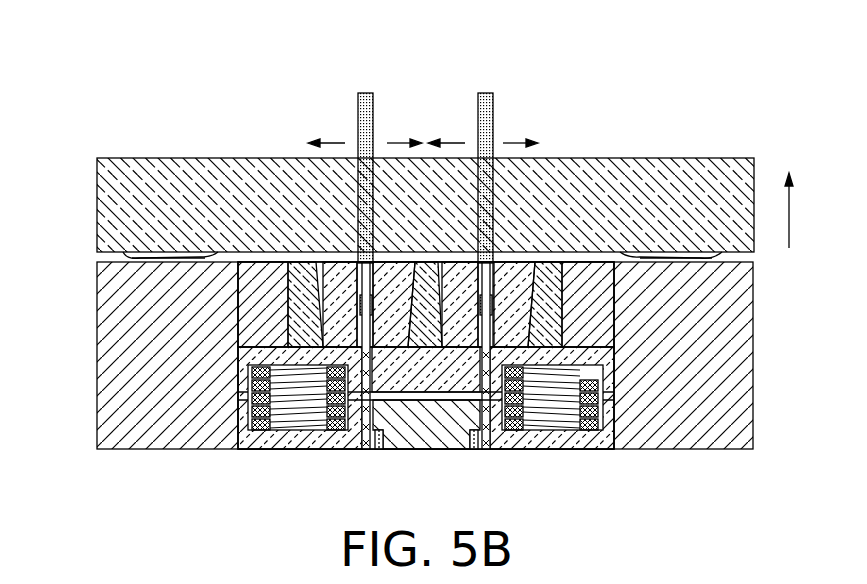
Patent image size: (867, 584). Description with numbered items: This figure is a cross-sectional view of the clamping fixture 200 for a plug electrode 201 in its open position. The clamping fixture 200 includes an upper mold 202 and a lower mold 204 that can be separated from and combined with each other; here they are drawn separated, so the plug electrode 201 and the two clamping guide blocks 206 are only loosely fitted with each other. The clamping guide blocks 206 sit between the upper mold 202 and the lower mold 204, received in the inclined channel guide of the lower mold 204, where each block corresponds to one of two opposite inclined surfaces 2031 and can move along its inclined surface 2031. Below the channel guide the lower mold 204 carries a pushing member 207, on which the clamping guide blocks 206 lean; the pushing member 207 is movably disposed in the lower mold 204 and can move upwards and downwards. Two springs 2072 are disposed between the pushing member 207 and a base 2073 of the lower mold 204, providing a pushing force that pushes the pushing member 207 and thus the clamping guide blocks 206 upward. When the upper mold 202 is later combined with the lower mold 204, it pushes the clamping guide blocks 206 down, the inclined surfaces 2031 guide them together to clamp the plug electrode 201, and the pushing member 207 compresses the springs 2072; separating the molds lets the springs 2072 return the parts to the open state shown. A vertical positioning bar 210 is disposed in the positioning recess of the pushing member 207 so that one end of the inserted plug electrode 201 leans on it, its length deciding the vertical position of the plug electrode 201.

The clamping fixture 200 is at (88, 35).
The plug electrode 201 is at (366, 92).
The upper mold 202 is at (722, 172).
The lower mold 204 is at (753, 407).
The clamping guide block 206 is at (328, 268).
The inclined surface 2031 is at (327, 330).
The pushing member 207 is at (450, 408).
The spring 2072 is at (298, 418).
The base 2073 is at (395, 430).
The vertical positioning bar 210 is at (366, 450).